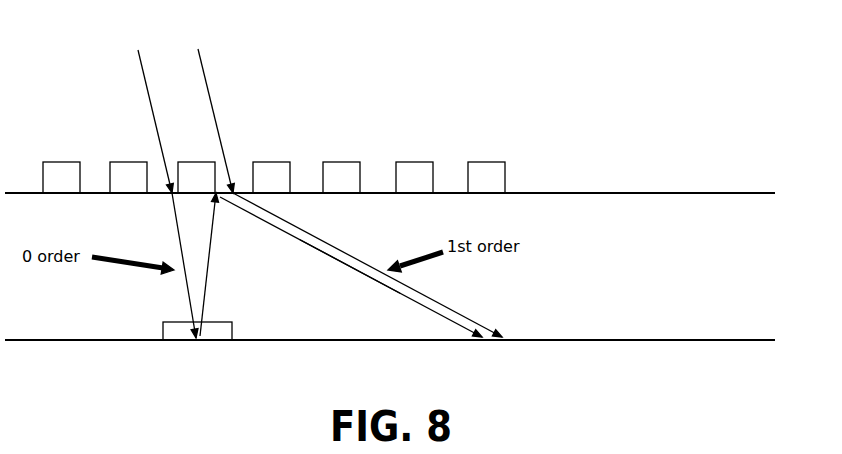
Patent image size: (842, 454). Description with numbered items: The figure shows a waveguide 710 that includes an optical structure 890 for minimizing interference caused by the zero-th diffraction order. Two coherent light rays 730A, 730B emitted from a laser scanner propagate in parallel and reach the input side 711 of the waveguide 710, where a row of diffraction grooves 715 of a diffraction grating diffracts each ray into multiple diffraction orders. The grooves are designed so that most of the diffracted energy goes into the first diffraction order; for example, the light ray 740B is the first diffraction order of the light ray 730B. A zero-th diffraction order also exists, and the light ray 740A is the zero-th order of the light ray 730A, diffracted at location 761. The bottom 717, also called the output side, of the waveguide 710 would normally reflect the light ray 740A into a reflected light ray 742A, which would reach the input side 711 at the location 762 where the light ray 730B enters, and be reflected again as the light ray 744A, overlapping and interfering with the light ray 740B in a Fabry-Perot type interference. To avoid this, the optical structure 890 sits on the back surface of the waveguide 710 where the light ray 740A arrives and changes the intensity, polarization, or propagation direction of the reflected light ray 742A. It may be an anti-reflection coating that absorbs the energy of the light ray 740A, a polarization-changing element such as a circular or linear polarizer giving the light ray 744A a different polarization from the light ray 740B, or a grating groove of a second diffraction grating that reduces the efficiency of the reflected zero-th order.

The waveguide 710 is at (738, 258).
The input side 711 is at (626, 193).
The diffraction grooves 715 is at (274, 177).
The bottom 717 is at (583, 340).
The light ray 730A is at (138, 50).
The light ray 730B is at (205, 68).
The light ray of zero-th diffraction order 740A is at (191, 310).
The light ray of first diffraction order 740B is at (433, 296).
The reflected light ray 742A is at (204, 290).
The reflected light ray 744A is at (371, 276).
The location 761 is at (172, 195).
The location 762 is at (236, 193).
The optical structure 890 is at (205, 341).